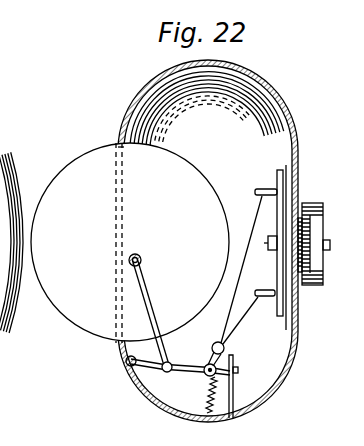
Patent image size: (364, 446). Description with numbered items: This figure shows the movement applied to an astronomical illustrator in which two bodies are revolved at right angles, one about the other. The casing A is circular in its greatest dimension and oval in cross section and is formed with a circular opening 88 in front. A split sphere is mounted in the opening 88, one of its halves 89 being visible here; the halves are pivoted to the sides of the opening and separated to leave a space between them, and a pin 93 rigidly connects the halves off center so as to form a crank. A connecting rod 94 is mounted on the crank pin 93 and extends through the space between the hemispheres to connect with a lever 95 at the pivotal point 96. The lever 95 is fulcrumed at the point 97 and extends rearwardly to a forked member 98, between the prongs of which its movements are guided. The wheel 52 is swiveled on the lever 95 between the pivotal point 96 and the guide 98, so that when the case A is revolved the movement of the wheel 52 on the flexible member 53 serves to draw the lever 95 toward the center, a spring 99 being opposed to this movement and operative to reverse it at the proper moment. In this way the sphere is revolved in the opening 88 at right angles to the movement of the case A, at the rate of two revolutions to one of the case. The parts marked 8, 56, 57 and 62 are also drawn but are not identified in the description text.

The casing A is at (290, 118).
The nut 8 is at (268, 244).
The wheel 52 is at (226, 352).
The flexible member 53 is at (238, 272).
The pin 56 is at (261, 189).
The rod 57 is at (251, 299).
The plate 62 is at (278, 223).
The circular opening 88 is at (117, 141).
The half of the sphere 89 is at (130, 243).
The pin 93 is at (141, 258).
The connecting rod 94 is at (157, 313).
The lever 95 is at (190, 366).
The pivotal point 96 is at (169, 373).
The fulcrum point 97 is at (128, 364).
The forked member 98 is at (234, 391).
The spring 99 is at (206, 406).